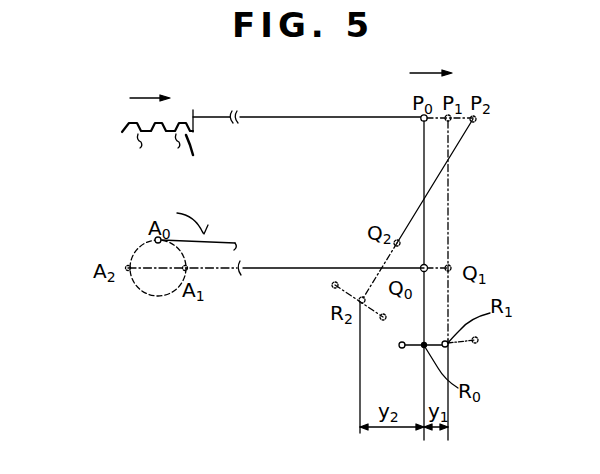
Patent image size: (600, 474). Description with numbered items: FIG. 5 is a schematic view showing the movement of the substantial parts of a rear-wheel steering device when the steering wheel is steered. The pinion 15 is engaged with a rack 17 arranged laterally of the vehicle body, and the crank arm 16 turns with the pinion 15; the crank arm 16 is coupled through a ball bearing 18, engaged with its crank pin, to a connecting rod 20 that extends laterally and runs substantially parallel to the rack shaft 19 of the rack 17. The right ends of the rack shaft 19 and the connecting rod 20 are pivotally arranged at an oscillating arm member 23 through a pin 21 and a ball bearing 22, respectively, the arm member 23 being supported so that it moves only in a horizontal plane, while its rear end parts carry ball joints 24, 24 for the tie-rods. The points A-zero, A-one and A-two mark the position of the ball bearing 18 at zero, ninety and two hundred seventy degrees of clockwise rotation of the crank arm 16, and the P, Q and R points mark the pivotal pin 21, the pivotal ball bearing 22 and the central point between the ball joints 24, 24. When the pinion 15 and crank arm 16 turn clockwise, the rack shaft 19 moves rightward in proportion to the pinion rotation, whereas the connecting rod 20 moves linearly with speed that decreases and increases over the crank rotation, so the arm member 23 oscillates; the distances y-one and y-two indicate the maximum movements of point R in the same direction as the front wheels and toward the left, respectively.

The pinion 15 is at (150, 140).
The crank arm 16 is at (146, 296).
The rack 17 is at (122, 132).
The ball bearing 18 is at (154, 243).
The rack shaft 19 is at (302, 117).
The connecting rod 20 is at (295, 267).
The pin 21 is at (421, 120).
The ball bearing 22 is at (427, 266).
The oscillating arm member 23 is at (423, 170).
The ball joints 24 is at (400, 347).